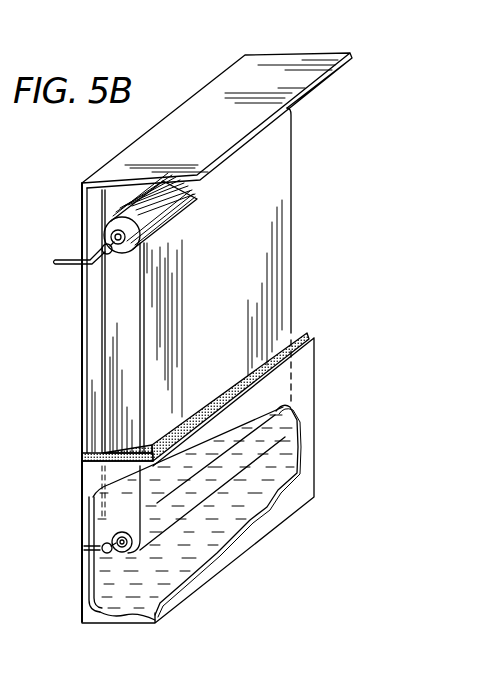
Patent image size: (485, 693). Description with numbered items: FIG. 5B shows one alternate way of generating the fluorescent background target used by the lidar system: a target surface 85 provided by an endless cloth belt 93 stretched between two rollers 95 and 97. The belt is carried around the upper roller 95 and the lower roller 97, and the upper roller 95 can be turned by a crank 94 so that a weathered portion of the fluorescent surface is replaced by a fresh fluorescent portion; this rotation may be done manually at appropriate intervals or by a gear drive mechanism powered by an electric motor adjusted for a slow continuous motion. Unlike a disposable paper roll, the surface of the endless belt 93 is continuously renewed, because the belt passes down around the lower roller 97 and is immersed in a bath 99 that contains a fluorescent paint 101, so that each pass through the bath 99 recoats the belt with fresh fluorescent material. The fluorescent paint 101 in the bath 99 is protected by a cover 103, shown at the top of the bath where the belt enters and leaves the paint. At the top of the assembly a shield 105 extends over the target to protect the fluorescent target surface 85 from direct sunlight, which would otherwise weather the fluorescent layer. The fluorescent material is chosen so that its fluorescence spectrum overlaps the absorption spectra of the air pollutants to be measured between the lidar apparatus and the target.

The target surface 85 is at (276, 192).
The endless cloth belt 93 is at (102, 363).
The crank 94 is at (60, 258).
The roller 95 is at (140, 240).
The roller 97 is at (112, 536).
The bath 99 is at (231, 558).
The fluorescent paint 101 is at (283, 455).
The cover 103 is at (305, 330).
The shield 105 is at (332, 54).